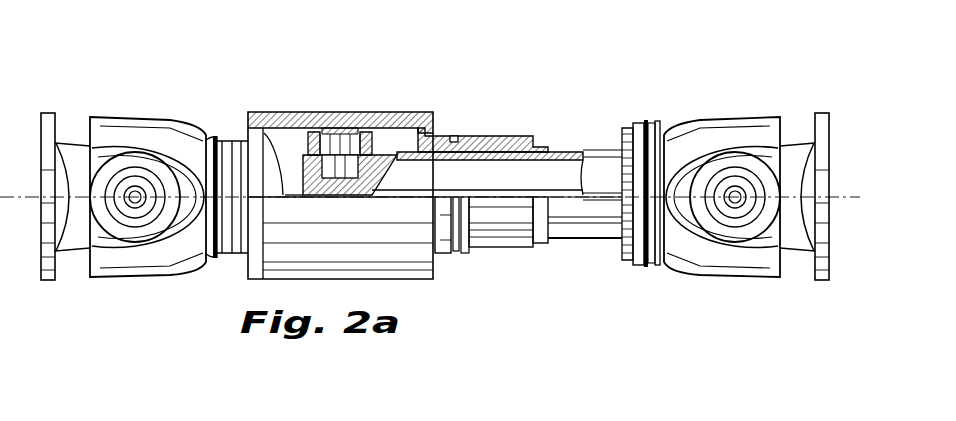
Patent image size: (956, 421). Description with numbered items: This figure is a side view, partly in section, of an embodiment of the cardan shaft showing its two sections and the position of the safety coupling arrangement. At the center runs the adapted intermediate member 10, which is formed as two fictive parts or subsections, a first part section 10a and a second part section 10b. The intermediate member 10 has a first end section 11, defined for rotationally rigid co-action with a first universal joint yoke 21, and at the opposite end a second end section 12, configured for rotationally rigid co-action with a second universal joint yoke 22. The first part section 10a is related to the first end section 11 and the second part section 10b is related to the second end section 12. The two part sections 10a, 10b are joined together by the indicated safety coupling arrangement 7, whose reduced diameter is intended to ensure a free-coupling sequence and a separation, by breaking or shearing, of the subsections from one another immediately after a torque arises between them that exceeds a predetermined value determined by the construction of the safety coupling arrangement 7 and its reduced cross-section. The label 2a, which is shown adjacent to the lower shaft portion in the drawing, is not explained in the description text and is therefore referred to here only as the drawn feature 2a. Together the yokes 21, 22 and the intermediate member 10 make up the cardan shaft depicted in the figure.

The second universal joint yoke 22 is at (171, 115).
The second end section 12 is at (243, 116).
The second part section 10b is at (320, 116).
The safety coupling arrangement 7 is at (458, 130).
The first part section 10a is at (580, 192).
The first end section 11 is at (652, 117).
The first universal joint yoke 21 is at (761, 123).
The cylindrical sleeve portion 2a is at (500, 259).
The intermediate member 10 is at (557, 240).